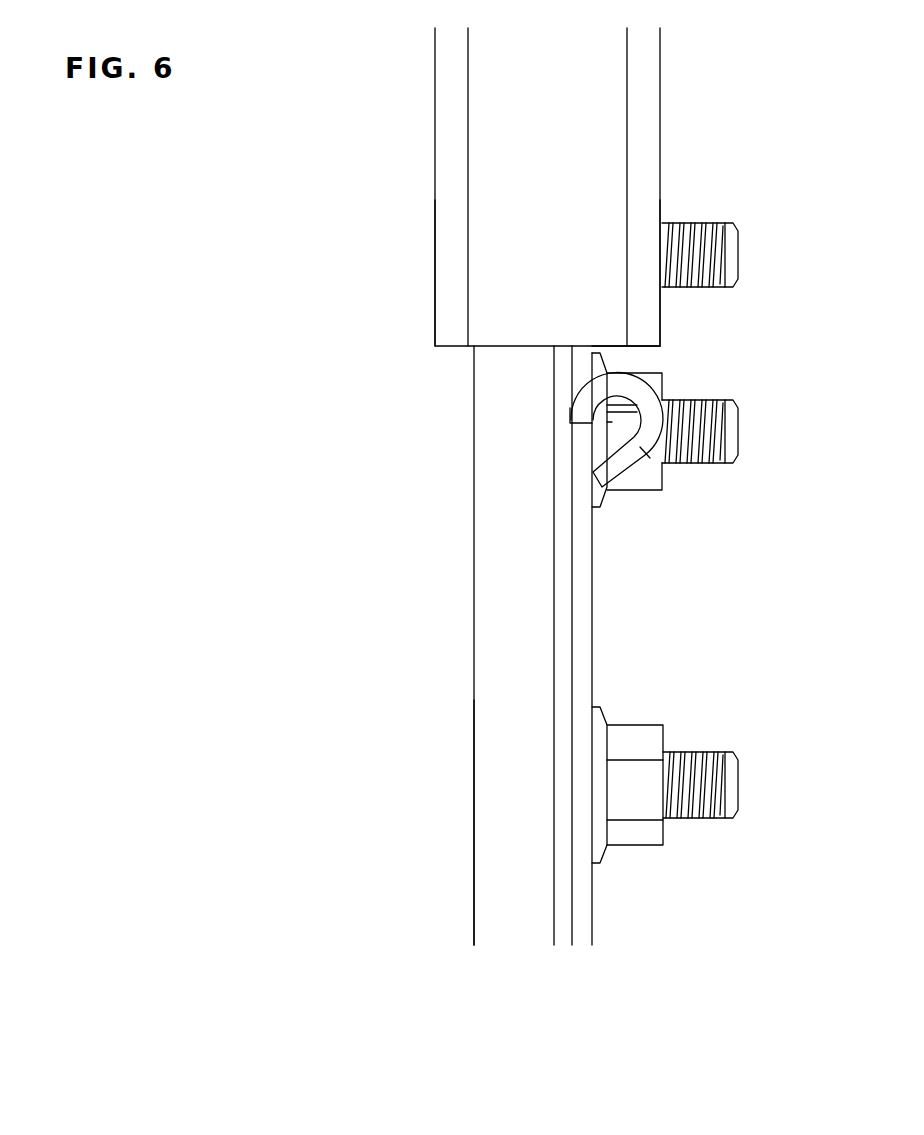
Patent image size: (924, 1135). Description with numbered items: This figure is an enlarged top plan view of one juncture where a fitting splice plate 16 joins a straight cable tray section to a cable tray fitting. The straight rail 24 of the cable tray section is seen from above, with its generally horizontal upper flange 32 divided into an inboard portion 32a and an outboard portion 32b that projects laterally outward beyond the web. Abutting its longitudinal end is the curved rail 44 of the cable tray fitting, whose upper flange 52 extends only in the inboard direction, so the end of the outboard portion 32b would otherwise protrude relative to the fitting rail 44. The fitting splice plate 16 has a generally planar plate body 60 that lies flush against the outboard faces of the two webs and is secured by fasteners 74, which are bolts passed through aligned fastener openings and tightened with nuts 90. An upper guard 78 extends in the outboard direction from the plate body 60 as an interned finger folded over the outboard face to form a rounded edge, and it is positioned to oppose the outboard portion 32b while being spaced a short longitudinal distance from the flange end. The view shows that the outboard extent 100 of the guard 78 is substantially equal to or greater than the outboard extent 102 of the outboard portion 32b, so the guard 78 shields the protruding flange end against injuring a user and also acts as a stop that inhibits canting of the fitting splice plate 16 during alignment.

The fitting splice plate 16 is at (660, 620).
The rail 24 is at (745, 78).
The upper flange 32 is at (563, 152).
The inboard portion of upper flange 32a is at (435, 323).
The outboard portion of upper flange 32b is at (630, 290).
The rail 44 is at (400, 838).
The upper flange 52 is at (515, 563).
The plate body 60 is at (612, 681).
The fastener 74 is at (740, 257).
The guard 78 is at (650, 397).
The nut 90 is at (638, 487).
The outboard extent of guard 100 is at (668, 428).
The outboard extent of outboard flange portion 102 is at (663, 338).